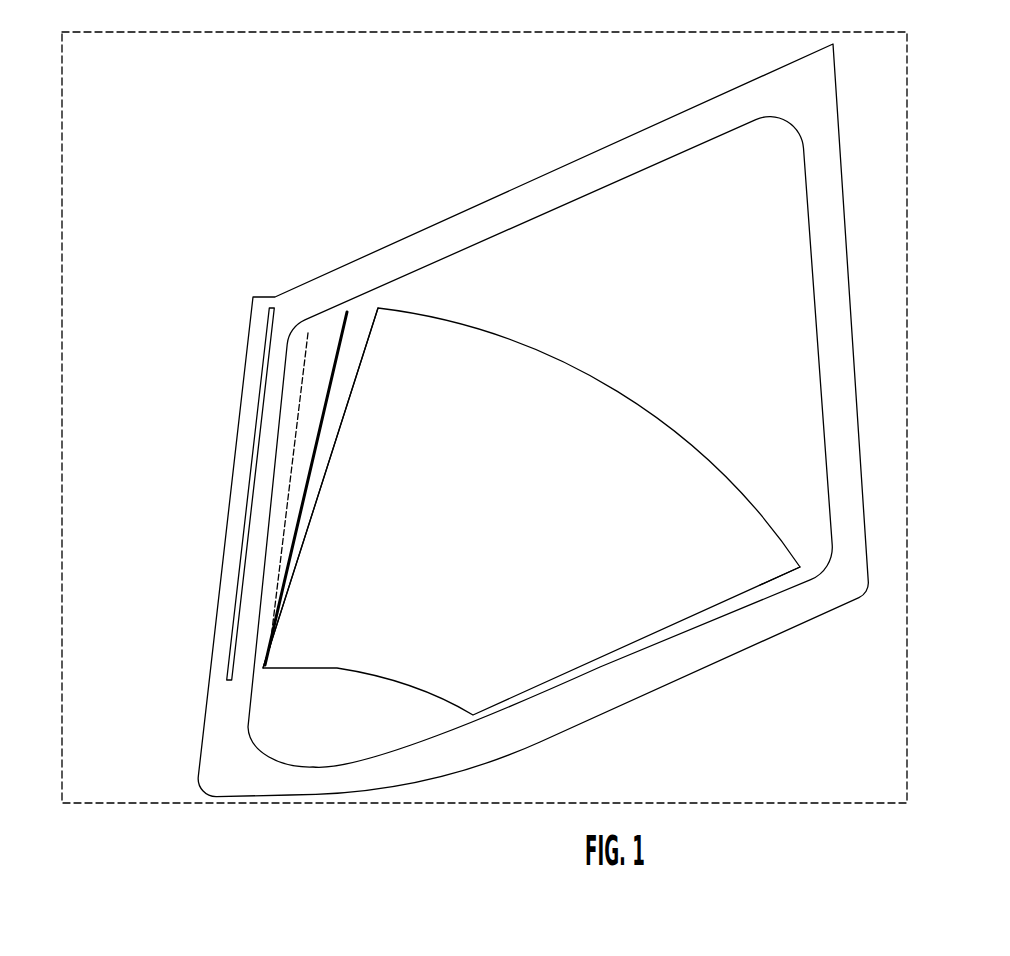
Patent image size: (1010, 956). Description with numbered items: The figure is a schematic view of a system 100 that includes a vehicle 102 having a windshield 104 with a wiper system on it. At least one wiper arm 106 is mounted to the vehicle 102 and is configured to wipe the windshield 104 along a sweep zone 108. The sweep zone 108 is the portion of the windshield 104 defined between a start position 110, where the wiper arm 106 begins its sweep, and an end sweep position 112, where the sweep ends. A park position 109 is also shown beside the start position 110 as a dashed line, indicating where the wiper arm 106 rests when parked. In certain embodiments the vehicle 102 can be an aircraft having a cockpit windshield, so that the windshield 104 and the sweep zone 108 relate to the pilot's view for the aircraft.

The system 100 is at (110, 845).
The vehicle 102 is at (828, 805).
The windshield 104 is at (790, 350).
The wiper arm 106 is at (320, 430).
The sweep zone 108 is at (581, 371).
The park position 109 is at (303, 365).
The start position 110 is at (368, 338).
The end sweep position 112 is at (783, 567).